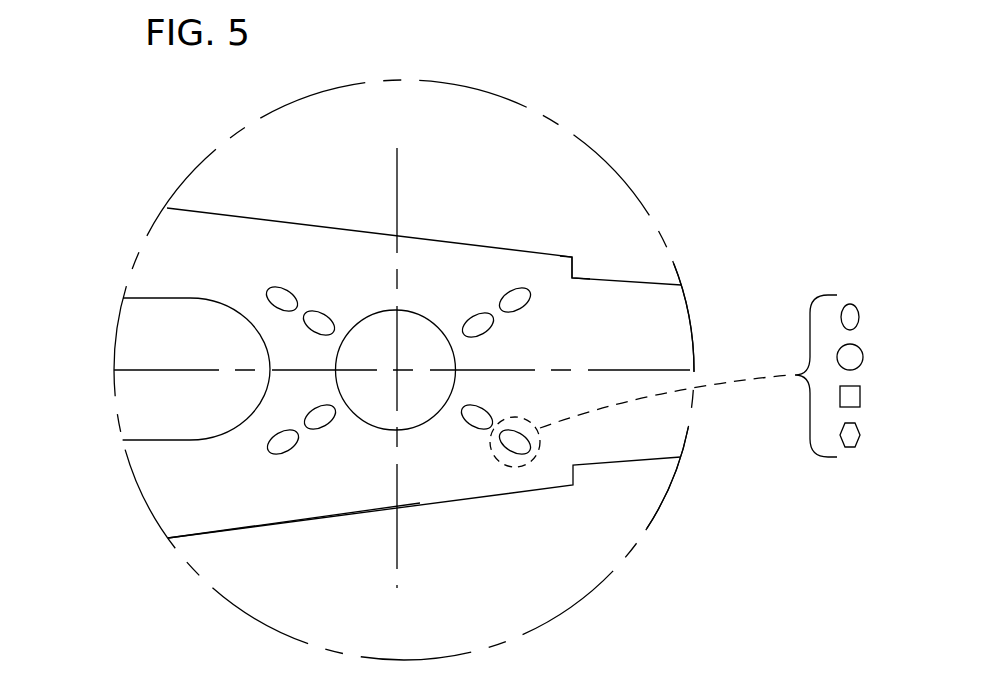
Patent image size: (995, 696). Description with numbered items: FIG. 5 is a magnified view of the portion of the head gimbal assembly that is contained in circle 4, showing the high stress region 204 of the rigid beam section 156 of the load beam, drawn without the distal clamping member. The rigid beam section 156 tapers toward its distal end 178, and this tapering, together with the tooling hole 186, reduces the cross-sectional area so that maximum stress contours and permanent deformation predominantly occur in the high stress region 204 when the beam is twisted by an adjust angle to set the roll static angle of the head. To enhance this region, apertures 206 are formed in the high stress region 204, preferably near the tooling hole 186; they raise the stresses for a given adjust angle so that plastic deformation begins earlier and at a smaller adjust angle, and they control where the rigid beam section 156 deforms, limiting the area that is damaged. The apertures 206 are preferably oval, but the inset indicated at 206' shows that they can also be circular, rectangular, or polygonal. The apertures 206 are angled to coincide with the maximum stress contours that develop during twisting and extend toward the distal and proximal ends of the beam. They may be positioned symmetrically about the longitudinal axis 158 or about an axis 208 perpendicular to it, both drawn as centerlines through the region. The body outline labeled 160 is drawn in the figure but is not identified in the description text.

The circle 4 is at (663, 493).
The rigid beam section 156 is at (188, 493).
The longitudinal axis 158 is at (137, 370).
The blade body 160 is at (663, 308).
The distal end 178 is at (553, 265).
The tooling hole 186 is at (391, 320).
The high stress region 204 is at (585, 595).
The apertures 206 is at (401, 334).
The apertures of other shapes 206' is at (734, 328).
The axis 208 is at (398, 166).